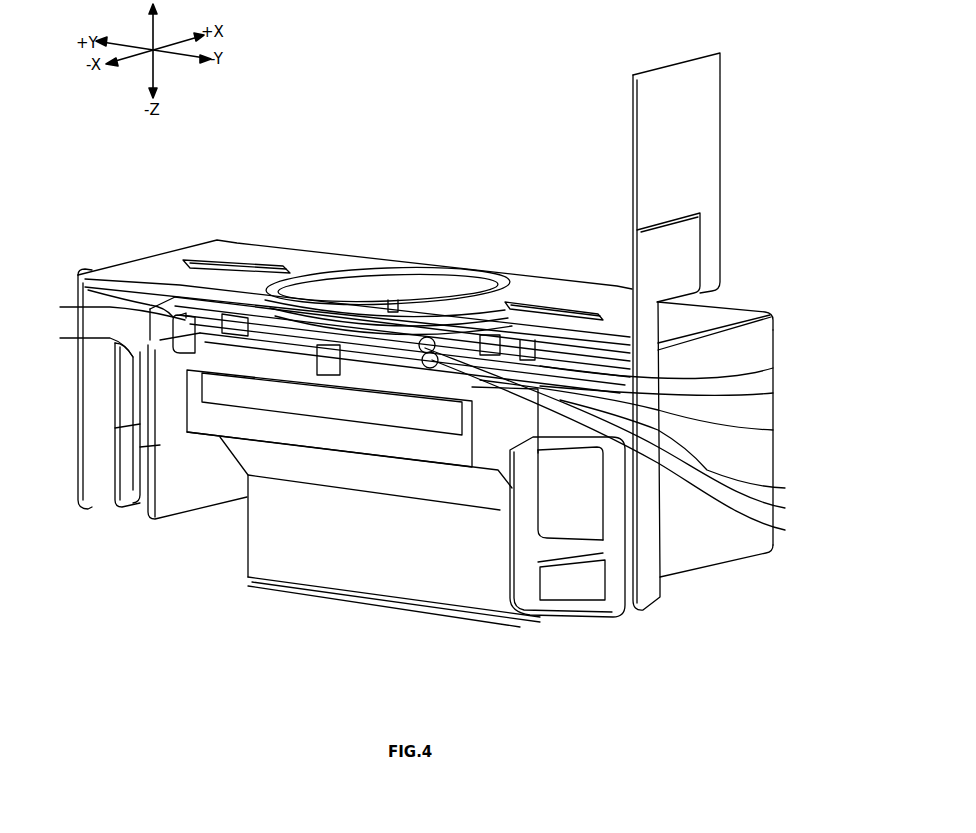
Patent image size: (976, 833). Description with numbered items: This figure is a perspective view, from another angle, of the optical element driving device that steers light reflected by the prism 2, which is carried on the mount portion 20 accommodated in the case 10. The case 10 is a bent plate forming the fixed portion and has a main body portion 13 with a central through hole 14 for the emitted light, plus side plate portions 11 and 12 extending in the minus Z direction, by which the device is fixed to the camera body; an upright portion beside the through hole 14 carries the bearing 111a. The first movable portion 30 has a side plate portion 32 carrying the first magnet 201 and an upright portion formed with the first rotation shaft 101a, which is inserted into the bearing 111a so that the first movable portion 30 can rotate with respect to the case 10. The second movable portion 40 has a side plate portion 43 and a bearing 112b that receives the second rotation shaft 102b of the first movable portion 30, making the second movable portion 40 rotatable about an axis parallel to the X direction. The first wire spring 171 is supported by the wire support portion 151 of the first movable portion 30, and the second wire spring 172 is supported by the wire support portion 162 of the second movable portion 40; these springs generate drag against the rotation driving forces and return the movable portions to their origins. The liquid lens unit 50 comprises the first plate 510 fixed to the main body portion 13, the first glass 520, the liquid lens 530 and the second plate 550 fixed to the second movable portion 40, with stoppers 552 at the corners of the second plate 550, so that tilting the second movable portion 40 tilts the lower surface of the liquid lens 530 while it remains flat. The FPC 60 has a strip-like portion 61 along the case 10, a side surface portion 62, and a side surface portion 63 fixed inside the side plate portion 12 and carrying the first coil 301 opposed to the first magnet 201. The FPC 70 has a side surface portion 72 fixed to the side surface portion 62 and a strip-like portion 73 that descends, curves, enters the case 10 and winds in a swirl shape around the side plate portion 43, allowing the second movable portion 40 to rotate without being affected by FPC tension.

The prism 2 is at (195, 366).
The case 10 is at (765, 335).
The side plate portion 11 is at (745, 459).
The side plate portion 12 is at (93, 480).
The main body portion 13 is at (238, 250).
The through hole 14 is at (436, 283).
The mount portion 20 is at (298, 573).
The first movable portion 30 is at (220, 303).
The side plate portion 32 is at (193, 495).
The second movable portion 40 is at (773, 430).
The side plate portion 43 is at (785, 488).
The liquid lens unit 50 is at (375, 290).
The FPC 60 is at (683, 140).
The strip-like portion 61 is at (110, 268).
The side surface portion 62 is at (685, 168).
The side surface portion 63 is at (95, 338).
The FPC 70 is at (688, 240).
The side surface portion 72 is at (688, 268).
The strip-like portion 73 is at (580, 613).
The first rotation shaft 101a is at (773, 368).
The second rotation shaft 102b is at (327, 375).
The bearing 111a is at (528, 290).
The bearing 112b is at (363, 343).
The wire support portion 151 is at (100, 307).
The wire support portion 162 is at (773, 393).
The first wire spring 171 is at (207, 343).
The second wire spring 172 is at (490, 290).
The first magnet 201 is at (145, 442).
The first coil 301 is at (125, 418).
The first plate 510 is at (390, 290).
The first glass 520 is at (350, 290).
The liquid lens 530 is at (285, 318).
The second plate 550 is at (785, 530).
The stopper 552 is at (785, 508).